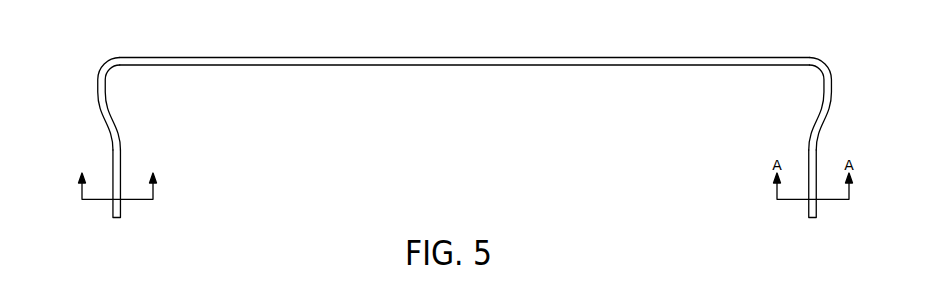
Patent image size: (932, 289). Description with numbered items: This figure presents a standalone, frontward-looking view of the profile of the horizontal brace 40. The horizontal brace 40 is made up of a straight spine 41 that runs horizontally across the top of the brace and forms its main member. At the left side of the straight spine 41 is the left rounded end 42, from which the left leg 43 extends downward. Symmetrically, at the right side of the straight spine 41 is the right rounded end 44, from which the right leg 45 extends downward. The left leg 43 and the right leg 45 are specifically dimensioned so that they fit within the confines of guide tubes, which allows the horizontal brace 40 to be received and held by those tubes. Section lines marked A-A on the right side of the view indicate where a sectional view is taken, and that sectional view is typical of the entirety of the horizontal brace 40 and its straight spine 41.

The horizontal brace 40 is at (467, 112).
The straight spine 41 is at (457, 57).
The left rounded end 42 is at (104, 59).
The left leg 43 is at (112, 148).
The right rounded end 44 is at (825, 60).
The right leg 45 is at (817, 148).